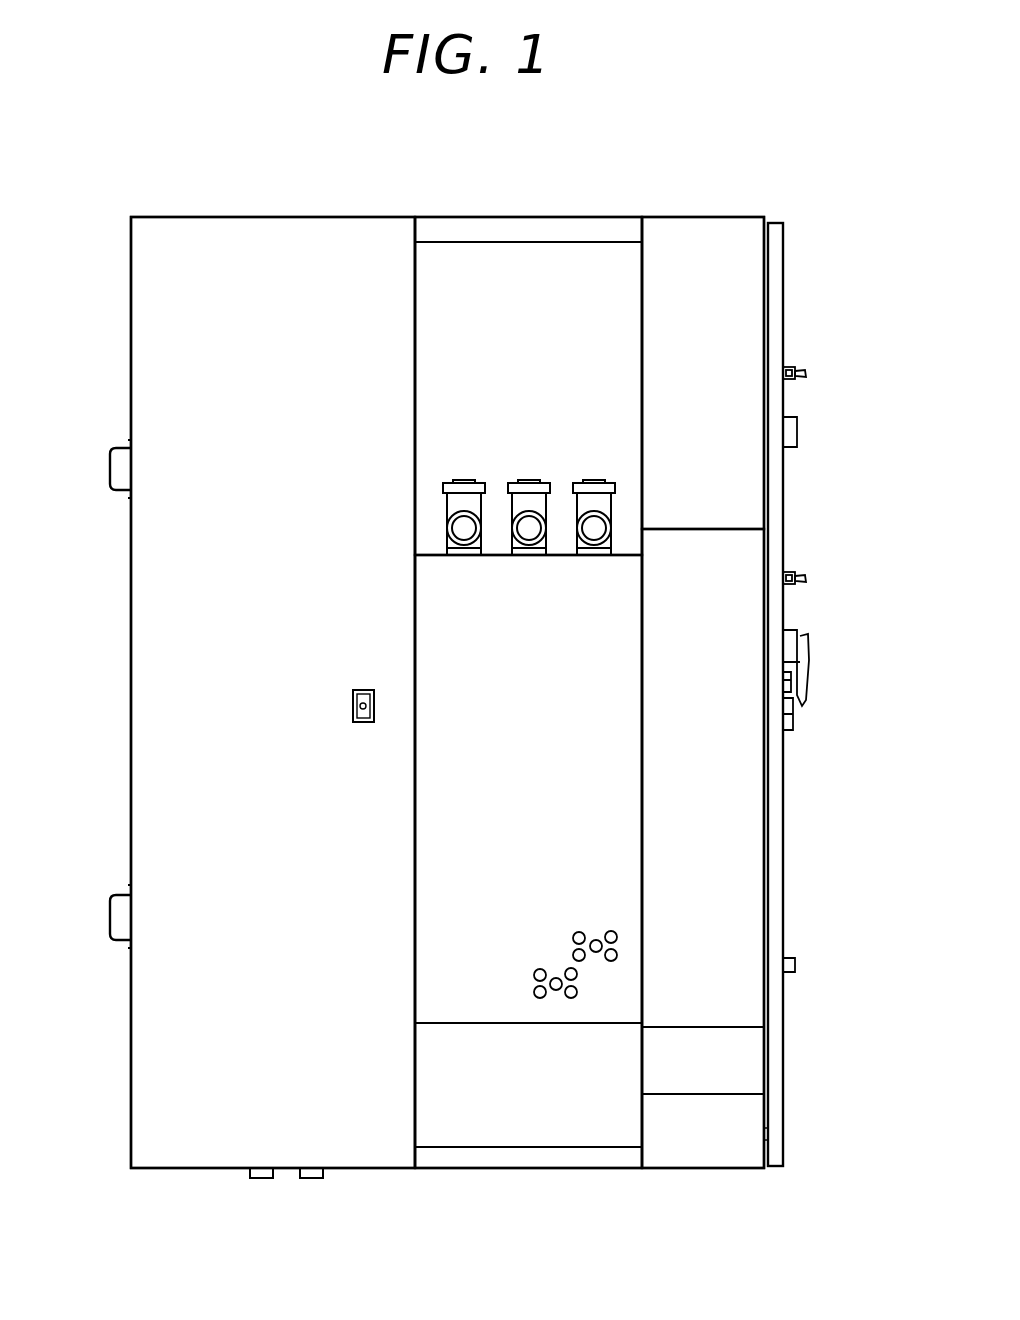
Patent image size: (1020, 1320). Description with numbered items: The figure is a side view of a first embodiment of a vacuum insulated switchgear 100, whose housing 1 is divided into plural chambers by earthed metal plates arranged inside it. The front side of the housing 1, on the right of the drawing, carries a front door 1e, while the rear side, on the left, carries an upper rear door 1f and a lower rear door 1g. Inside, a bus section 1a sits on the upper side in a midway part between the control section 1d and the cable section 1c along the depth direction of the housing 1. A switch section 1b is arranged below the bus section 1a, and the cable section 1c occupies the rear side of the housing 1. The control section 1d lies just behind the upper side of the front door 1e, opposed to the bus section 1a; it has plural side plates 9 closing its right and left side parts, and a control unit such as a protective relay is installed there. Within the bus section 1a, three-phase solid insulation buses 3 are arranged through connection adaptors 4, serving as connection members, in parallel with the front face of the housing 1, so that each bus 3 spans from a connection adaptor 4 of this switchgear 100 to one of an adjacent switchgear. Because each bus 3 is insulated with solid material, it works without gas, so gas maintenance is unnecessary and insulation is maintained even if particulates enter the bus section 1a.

The housing 1 is at (291, 216).
The vacuum insulated switchgear 100 is at (420, 210).
The bus section 1a is at (558, 260).
The switch section 1b is at (511, 1006).
The cable section 1c is at (148, 347).
The control section 1d is at (743, 318).
The front door 1e is at (783, 271).
The upper rear door 1f is at (131, 416).
The lower rear door 1g is at (131, 859).
The solid insulation bus 3 is at (463, 512).
The connection adaptor 4 is at (483, 506).
The side plate 9 is at (742, 552).